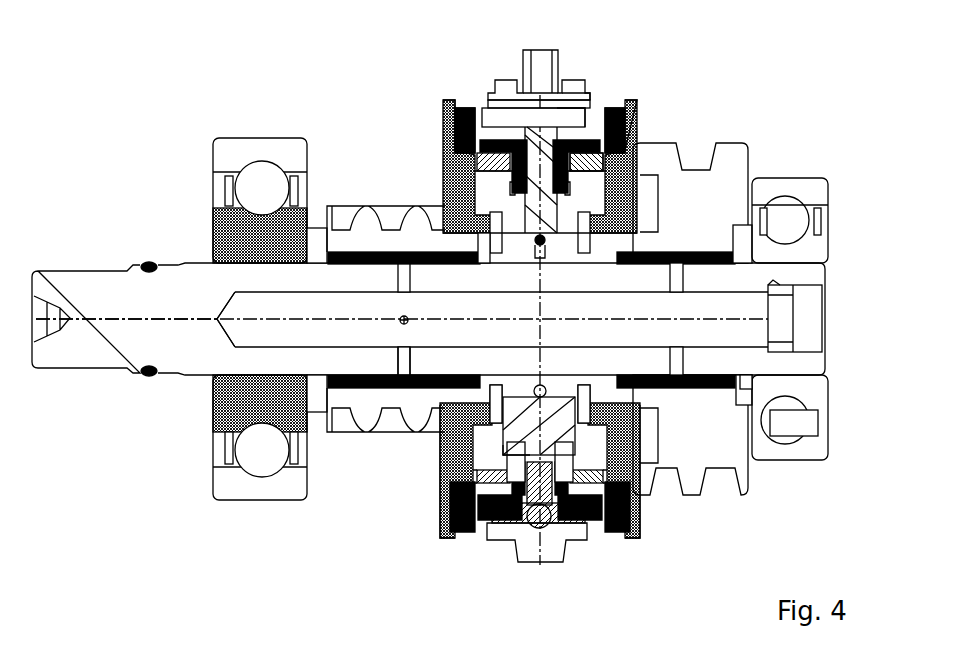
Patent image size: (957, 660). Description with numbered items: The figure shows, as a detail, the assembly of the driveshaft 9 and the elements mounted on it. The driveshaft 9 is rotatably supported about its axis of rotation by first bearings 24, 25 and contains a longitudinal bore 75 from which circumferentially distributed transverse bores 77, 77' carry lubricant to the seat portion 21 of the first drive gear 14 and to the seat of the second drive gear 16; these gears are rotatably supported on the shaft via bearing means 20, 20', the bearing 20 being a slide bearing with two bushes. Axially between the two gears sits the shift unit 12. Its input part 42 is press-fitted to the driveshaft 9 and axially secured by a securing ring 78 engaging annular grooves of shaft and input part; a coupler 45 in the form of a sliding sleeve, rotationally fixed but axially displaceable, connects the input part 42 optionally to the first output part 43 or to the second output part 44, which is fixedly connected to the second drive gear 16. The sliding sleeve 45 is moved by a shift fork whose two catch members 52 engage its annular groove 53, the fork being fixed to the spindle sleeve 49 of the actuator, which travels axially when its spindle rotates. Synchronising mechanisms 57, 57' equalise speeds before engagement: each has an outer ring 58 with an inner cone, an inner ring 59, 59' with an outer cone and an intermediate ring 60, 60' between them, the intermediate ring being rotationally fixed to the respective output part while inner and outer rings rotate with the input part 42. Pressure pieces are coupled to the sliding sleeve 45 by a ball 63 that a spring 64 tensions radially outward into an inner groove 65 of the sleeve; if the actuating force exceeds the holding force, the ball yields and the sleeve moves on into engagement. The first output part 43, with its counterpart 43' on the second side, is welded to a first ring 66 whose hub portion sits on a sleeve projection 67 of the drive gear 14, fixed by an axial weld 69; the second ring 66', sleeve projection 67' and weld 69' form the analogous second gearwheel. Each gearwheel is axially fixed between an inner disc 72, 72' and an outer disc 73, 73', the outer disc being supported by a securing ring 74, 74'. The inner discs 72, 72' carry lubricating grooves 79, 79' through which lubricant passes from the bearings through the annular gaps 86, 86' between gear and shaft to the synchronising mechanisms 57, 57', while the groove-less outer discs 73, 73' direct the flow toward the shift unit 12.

The driveshaft 9 is at (170, 283).
The spindle sleeve 49 is at (105, 317).
The seat portion 21 is at (273, 219).
The first bearing 24 is at (212, 166).
The first bearing 25 is at (812, 178).
The first drive gear 14 is at (347, 215).
The bearing 20 is at (379, 447).
The second drive gear 16 is at (733, 143).
The bearing means 20' is at (699, 460).
The shift unit 12 is at (498, 72).
The first output part 43 is at (410, 92).
The output part 43' is at (619, 94).
The second output part 44 is at (604, 118).
The coupler 45 is at (572, 100).
The catch members 52 is at (553, 64).
The annular groove 53 is at (531, 80).
The outer ring 58 is at (486, 108).
The inner ring 59 is at (450, 176).
The inner ring 59' is at (628, 176).
The intermediate ring 60 is at (533, 223).
The intermediate ring 60' is at (614, 84).
The first ring 66 is at (415, 115).
The second ring 66' is at (662, 114).
The annular gap 86 is at (431, 217).
The annular gap 86' is at (767, 189).
The grooves 79 is at (458, 466).
The grooves 79' is at (625, 357).
The sleeve projection 67 is at (404, 320).
The sleeve projection 67' is at (676, 399).
The first inner disc 72 is at (484, 373).
The inner disc 72' is at (606, 373).
The first outer disc 73 is at (366, 321).
The outer disc 73' is at (778, 440).
The securing ring 74 is at (306, 320).
The securing ring 74' is at (811, 390).
The longitudinal bore 75 is at (750, 312).
The transverse bores 77 is at (388, 426).
The transverse bores 77' is at (704, 319).
The securing ring 78 is at (546, 260).
The input part 42 is at (574, 258).
The weld 69 is at (524, 374).
The weld 69' is at (584, 373).
The synchronising mechanism 57 is at (458, 525).
The synchronising mechanism 57' is at (620, 525).
The ball 63 is at (550, 552).
The spring 64 is at (528, 553).
The inner groove 65 is at (537, 560).